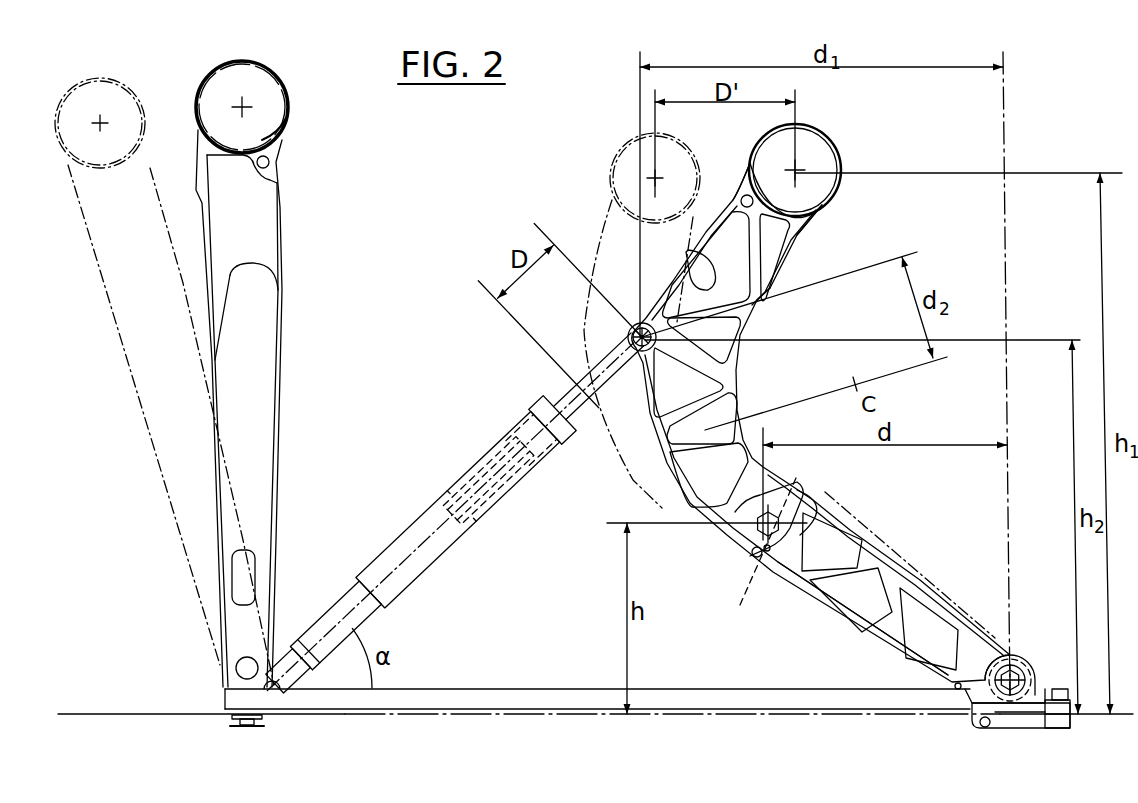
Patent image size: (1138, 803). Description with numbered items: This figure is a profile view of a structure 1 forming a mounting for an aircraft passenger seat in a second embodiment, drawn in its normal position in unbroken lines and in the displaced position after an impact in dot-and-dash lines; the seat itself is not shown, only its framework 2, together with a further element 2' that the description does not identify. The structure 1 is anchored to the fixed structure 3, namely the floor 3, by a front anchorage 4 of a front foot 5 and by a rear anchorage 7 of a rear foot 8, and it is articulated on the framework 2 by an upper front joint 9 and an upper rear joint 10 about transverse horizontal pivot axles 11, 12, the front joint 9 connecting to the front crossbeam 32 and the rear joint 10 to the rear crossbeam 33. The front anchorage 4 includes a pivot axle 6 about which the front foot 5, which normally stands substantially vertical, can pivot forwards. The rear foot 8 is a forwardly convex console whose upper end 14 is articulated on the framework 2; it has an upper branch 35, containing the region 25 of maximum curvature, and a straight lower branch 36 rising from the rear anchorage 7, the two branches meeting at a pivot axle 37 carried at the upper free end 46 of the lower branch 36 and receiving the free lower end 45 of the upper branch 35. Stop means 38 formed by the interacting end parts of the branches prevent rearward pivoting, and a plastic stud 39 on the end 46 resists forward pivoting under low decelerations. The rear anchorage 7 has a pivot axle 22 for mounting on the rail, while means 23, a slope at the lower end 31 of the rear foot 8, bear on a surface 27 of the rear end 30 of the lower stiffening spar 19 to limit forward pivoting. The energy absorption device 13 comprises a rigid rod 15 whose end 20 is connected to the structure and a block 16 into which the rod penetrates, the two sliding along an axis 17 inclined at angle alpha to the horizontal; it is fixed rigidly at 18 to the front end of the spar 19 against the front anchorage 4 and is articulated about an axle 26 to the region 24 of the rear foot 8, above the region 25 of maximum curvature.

The structure 1 is at (522, 187).
The framework 2 is at (529, 122).
The inner tube 2' is at (472, 473).
The fixed structure 3 is at (118, 728).
The front anchorage 4 is at (227, 735).
The front foot 5 is at (262, 510).
The transverse horizontal pivot axle 6 is at (236, 673).
The rear anchorage 7 is at (1057, 737).
The rear foot 8 is at (847, 542).
The upper front joint 9 is at (298, 105).
The upper rear joint 10 is at (752, 145).
The transverse horizontal pivot axle 11 is at (250, 104).
The transverse horizontal pivot axle 12 is at (797, 170).
The energy absorption device 13 is at (505, 520).
The upper end 14 is at (815, 222).
The rigid rod 15 is at (323, 627).
The block 16 is at (553, 428).
The axis 17 is at (315, 662).
The rigid connection 18 is at (266, 694).
The lower stiffening spar 19 is at (473, 698).
The end of rod 20 is at (280, 660).
The transverse horizontal pivot axle 22 is at (1018, 668).
The slope 23 is at (977, 693).
The region 24 is at (633, 337).
The region of maximum curvature 25 is at (723, 443).
The transverse horizontal pivot axle 26 is at (640, 328).
The surface 27 is at (958, 689).
The rear end 30 is at (968, 704).
The lower end 31 is at (1000, 657).
The front crossbeam 32 is at (270, 120).
The rear crossbeam 33 is at (817, 185).
The upper branch 35 is at (770, 286).
The lower branch 36 is at (803, 575).
The pivot axle 37 is at (790, 522).
The stop means 38 is at (790, 483).
The plastic stud 39 is at (764, 552).
The free lower end 45 is at (762, 557).
The upper free end 46 is at (752, 551).